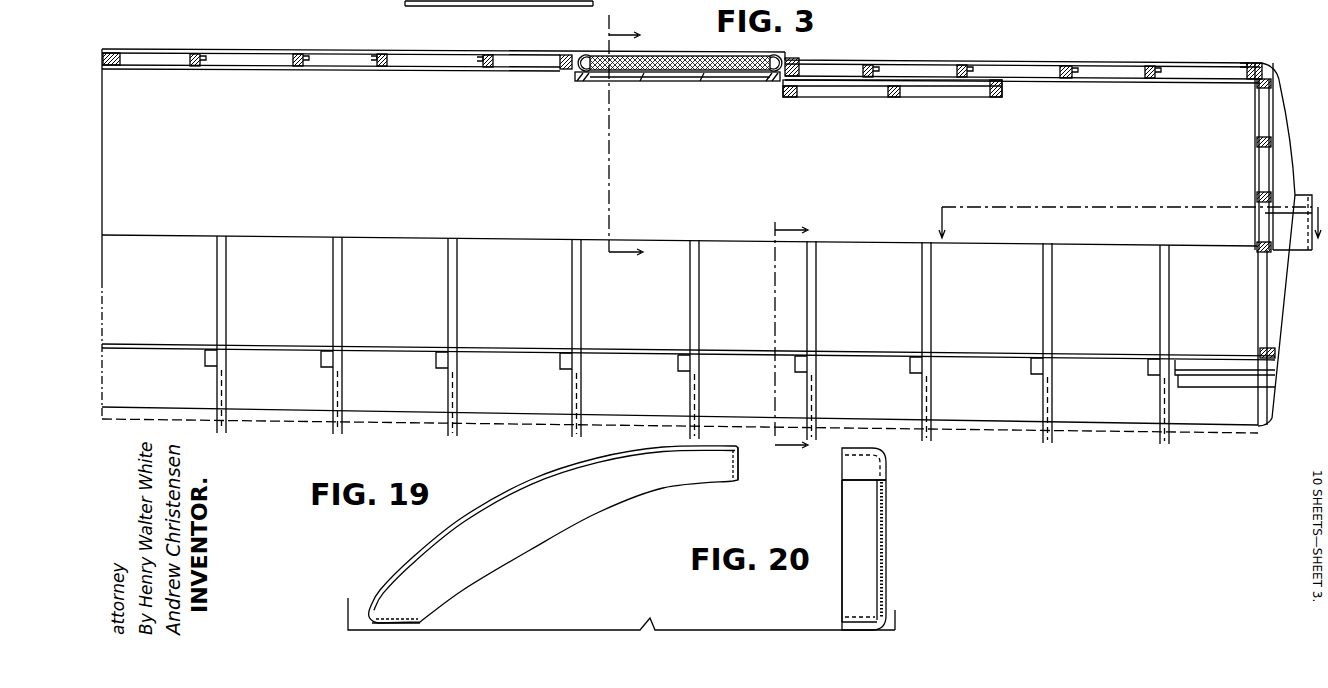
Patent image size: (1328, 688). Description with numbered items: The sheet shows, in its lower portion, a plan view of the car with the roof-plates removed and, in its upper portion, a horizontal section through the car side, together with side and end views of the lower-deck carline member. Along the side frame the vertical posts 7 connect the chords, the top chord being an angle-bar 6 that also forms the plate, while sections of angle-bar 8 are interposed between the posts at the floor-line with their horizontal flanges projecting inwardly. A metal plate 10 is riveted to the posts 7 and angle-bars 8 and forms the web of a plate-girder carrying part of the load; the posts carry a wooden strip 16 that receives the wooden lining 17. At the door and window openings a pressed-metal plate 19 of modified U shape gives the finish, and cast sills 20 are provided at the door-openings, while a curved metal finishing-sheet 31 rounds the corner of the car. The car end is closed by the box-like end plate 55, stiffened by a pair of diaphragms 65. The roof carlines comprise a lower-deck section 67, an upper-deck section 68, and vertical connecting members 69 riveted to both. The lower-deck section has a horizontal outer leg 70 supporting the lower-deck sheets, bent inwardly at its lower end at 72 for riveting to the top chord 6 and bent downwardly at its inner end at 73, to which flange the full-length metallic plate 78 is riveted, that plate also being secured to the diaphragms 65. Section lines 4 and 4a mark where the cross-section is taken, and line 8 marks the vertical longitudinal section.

In FIG. 3, the section line 4 4 is at (623, 145).
In FIG. 3, the section line 4ª 4ª 4a is at (785, 340).
In FIG. 3, the angle-bar 6 is at (1100, 418).
In FIG. 3, the posts 7 is at (287, 64).
In FIG. 3, the angle-bar sections 8 is at (1126, 224).
In FIG. 3, the metal plate 10 is at (437, 45).
In FIG. 3, the wooden strip 16 is at (378, 70).
In FIG. 3, the wooden lining 17 is at (1177, 84).
In FIG. 3, the pressed-metal plate 19 is at (783, 58).
In FIG. 3, the sills 20 is at (665, 56).
In FIG. 3, the curved metal finishing-sheet 31 is at (1258, 62).
In FIG. 3, the end plate 55 is at (1275, 308).
In FIG. 3, the diaphragms 65 is at (1262, 353).
In FIG. 3, the lower-deck section 67 is at (688, 399).
In FIG. 19, the lower-deck section 67 is at (573, 497).
In FIG. 20, the lower-deck section 67 is at (888, 538).
In FIG. 3, the upper-deck section 68 is at (447, 289).
In FIG. 3, the vertical connecting members 69 is at (570, 358).
In FIG. 19, the outer leg 70 is at (525, 485).
In FIG. 20, the outer leg 70 is at (852, 513).
In FIG. 19, the inwardly bent lower end 72 is at (400, 618).
In FIG. 20, the inwardly bent lower end 72 is at (858, 623).
In FIG. 19, the downwardly bent inner end 73 is at (730, 468).
In FIG. 20, the downwardly bent inner end 73 is at (852, 468).
In FIG. 3, the metallic plate 78 is at (495, 350).